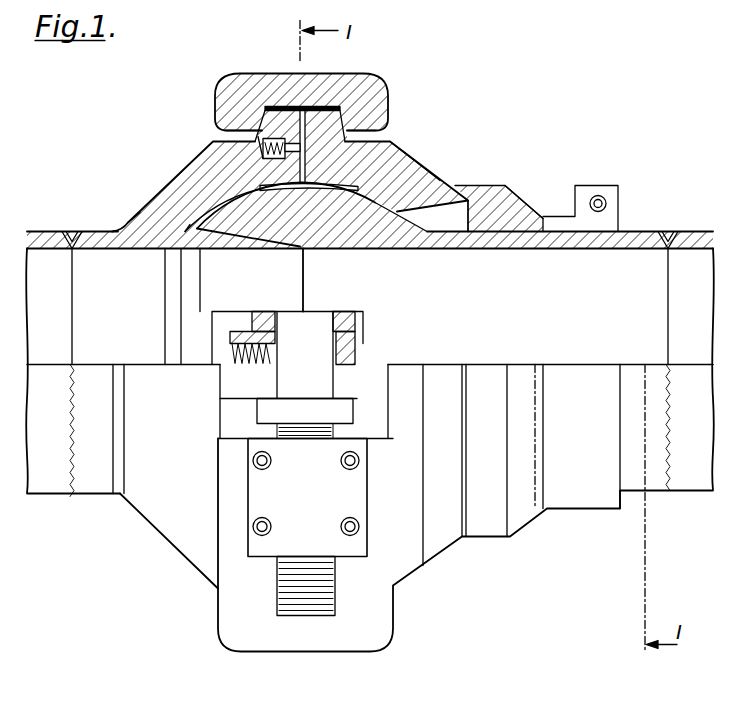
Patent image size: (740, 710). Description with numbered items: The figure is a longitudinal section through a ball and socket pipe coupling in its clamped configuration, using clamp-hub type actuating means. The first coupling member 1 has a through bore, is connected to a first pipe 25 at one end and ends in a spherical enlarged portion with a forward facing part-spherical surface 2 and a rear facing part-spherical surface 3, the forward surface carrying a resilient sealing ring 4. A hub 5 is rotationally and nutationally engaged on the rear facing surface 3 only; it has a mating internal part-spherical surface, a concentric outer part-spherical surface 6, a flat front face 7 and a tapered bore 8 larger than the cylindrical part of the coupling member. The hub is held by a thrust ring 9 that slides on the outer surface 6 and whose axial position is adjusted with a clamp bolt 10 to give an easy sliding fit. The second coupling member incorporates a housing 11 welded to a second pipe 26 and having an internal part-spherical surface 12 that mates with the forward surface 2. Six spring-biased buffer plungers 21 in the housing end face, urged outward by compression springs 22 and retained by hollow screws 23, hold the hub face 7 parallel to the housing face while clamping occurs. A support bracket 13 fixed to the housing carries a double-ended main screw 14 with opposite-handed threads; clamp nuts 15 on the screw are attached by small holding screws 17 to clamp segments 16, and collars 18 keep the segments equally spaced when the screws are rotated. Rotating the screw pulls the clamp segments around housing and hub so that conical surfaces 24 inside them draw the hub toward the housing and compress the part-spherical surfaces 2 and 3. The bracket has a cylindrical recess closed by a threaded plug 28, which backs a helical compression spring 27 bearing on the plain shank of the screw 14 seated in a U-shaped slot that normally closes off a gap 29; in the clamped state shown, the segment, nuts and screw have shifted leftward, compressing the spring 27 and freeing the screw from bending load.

The first coupling member 1 is at (465, 242).
The forward facing part-spherical surface portion 2 is at (250, 198).
The rear facing part-spherical surface portion 3 is at (376, 206).
The resilient sealing ring 4 is at (222, 212).
The hub 5 is at (395, 160).
The outer part-spherical surface 6 is at (435, 172).
The flat front face 7 is at (300, 128).
The tapered bore 8 is at (472, 194).
The thrust ring 9 is at (506, 206).
The clamp bolt 10 is at (600, 198).
The housing 11 is at (157, 217).
The internal part-spherical surface 12 is at (190, 197).
The support bracket 13 is at (212, 316).
The double-ended main screw 14 is at (310, 600).
The clamp nut 15 is at (260, 500).
The clamp segment 16 is at (320, 84).
The holding screw 17 is at (253, 530).
The collar 18 is at (340, 416).
The buffer plunger 21 is at (240, 150).
The compression spring 22 is at (250, 172).
The hollow screw 23 is at (283, 131).
The conical surface 24 is at (248, 116).
The first pipe 25 is at (700, 233).
The second pipe 26 is at (46, 233).
The helical compression spring 27 is at (252, 354).
The threaded plug 28 is at (218, 352).
The gap 29 is at (340, 344).